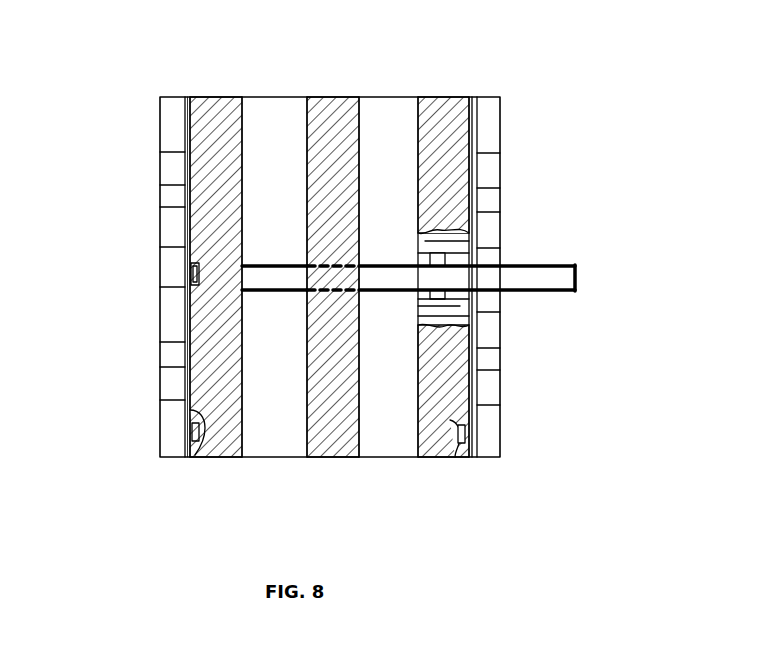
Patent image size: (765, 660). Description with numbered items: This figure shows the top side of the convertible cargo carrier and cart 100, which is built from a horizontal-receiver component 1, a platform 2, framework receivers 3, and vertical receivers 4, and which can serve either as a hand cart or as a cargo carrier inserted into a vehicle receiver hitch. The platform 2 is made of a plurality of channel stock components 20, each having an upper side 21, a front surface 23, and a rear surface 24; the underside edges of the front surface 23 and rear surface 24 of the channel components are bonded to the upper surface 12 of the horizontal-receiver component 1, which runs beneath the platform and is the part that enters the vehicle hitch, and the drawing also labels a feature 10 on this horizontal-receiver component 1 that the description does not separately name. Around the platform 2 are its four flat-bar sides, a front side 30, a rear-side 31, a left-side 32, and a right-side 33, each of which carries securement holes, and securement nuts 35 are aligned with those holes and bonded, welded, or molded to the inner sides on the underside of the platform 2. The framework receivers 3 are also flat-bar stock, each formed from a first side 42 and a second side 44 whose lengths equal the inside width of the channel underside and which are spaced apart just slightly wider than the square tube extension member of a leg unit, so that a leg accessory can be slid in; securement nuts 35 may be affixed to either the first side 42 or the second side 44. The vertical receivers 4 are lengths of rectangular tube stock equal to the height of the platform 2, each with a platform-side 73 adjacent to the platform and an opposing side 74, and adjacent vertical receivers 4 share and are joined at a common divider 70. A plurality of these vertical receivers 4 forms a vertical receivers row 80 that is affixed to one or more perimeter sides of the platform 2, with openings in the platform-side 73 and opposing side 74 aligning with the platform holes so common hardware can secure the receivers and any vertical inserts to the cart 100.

The convertible cargo carrier and cart 100 is at (255, 470).
The vertical receiver 4 is at (172, 124).
The common divider 70 is at (183, 152).
The opposing side 74 is at (172, 172).
The platform-side 73 is at (190, 265).
The vertical receivers row 80 is at (165, 460).
The rear-side 31 is at (195, 388).
The right-side 33 is at (268, 457).
The left-side 32 is at (290, 100).
The channel stock component 20 is at (306, 160).
The rear surface 24 is at (306, 232).
The upper side 21 is at (325, 168).
The front surface 23 is at (358, 232).
The front side 30 is at (470, 400).
The framework receiver 3 is at (450, 248).
The first side 42 is at (445, 297).
The second side 44 is at (432, 320).
The securement nut 35 is at (456, 455).
The platform 2 is at (375, 462).
The rod 10 is at (578, 276).
The upper surface 12 is at (540, 277).
The horizontal-receiver component 1 is at (565, 294).